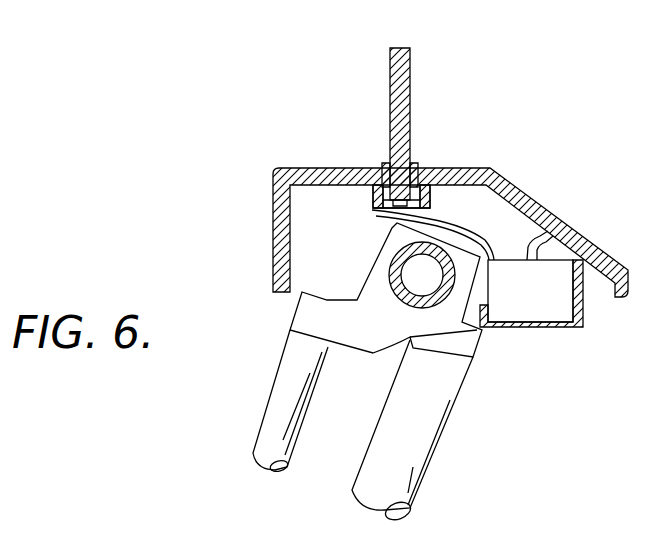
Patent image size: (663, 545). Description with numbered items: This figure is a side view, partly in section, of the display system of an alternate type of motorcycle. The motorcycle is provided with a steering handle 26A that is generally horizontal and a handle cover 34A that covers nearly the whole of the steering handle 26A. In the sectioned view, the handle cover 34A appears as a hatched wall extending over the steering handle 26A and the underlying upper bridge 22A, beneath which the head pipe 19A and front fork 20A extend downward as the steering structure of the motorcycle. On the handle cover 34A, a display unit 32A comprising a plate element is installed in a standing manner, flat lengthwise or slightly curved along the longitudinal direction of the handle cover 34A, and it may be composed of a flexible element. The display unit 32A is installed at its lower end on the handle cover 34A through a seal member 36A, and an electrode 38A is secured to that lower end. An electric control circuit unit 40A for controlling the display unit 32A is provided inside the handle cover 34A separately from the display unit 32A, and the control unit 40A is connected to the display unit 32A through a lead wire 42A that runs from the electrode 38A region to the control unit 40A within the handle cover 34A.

The head pipe 19A is at (443, 430).
The front fork 20A is at (280, 392).
The upper bridge 22A is at (303, 312).
The steering handle 26A is at (387, 280).
The display unit 32A is at (420, 93).
The handle cover 34A is at (502, 170).
The seal member 36A is at (412, 170).
The electrode 38A is at (383, 207).
The electric control circuit unit 40A is at (548, 307).
The lead wire 42A is at (447, 222).